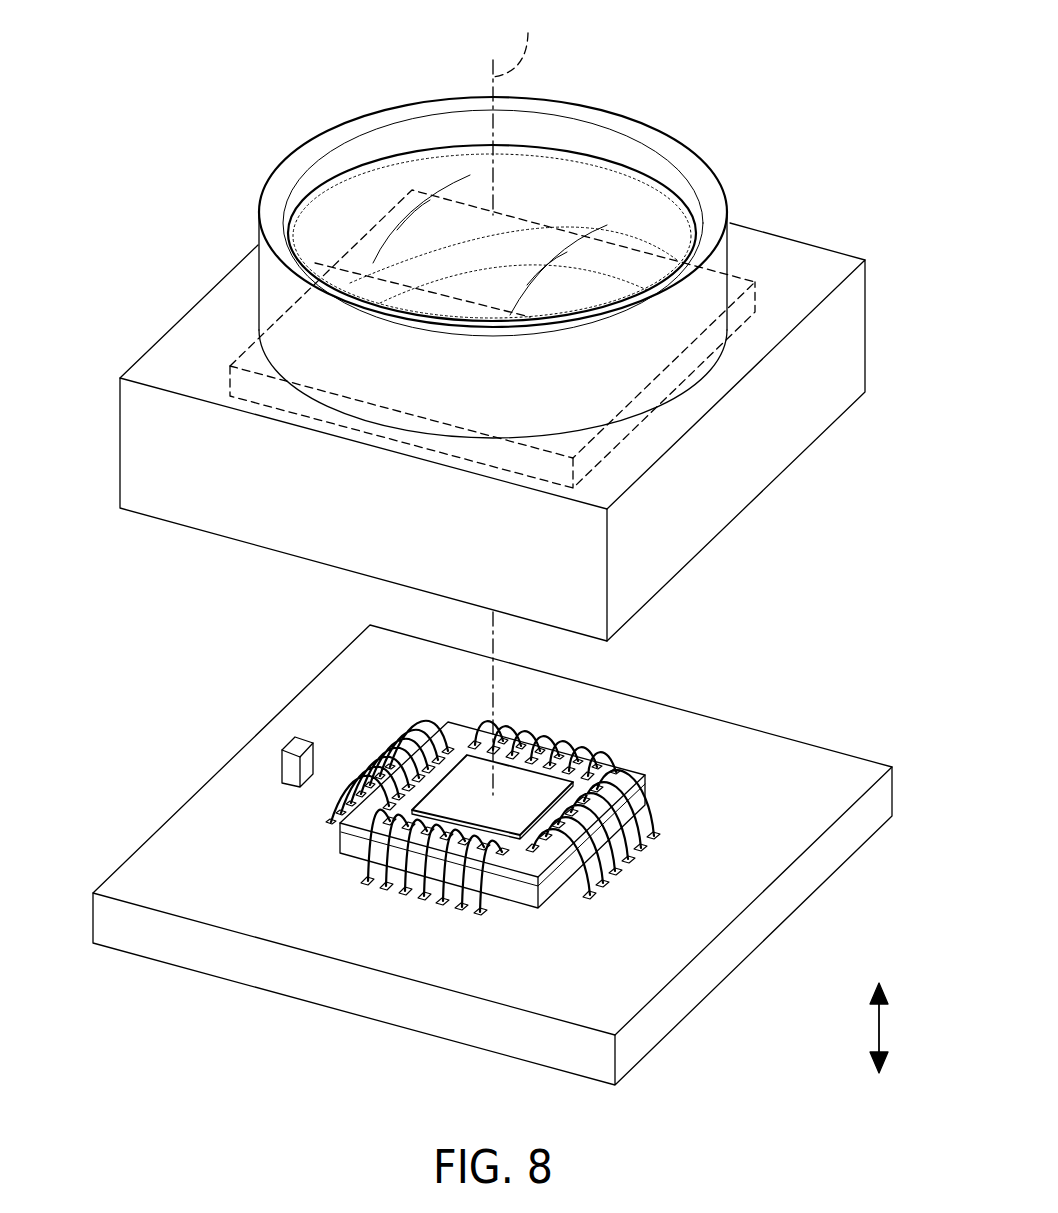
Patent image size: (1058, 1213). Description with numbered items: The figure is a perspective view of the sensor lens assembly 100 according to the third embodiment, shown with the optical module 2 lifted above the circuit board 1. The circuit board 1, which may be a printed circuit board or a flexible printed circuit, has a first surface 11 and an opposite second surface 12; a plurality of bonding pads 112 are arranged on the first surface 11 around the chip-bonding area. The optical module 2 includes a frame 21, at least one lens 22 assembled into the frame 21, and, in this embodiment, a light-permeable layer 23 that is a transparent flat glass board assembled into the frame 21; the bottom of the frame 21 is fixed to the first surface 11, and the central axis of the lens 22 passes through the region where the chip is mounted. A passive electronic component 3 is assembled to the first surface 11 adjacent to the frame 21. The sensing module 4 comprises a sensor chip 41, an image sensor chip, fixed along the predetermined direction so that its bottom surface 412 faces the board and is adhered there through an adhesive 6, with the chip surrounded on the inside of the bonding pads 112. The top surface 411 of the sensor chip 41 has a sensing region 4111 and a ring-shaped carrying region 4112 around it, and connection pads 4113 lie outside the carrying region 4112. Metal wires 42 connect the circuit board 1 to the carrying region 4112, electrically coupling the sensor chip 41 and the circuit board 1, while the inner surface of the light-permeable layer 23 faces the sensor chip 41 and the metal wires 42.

The sensor lens assembly 100 is at (780, 126).
The circuit board 1 is at (84, 917).
The first surface 11 is at (145, 871).
The second surface 12 is at (143, 967).
The bonding pads 112 is at (655, 832).
The optical module 2 is at (420, 56).
The frame 21 is at (311, 132).
The lens 22 is at (395, 148).
The light-permeable layer 23 is at (232, 343).
The passive electronic component 3 is at (272, 756).
The sensing module 4 is at (628, 762).
The sensor chip 41 is at (520, 885).
The top surface 411 is at (197, 573).
The sensing region 4111 is at (451, 792).
The carrying region 4112 is at (474, 744).
The connection pads 4113 is at (436, 717).
The bottom surface 412 is at (347, 865).
The metal wires 42 is at (657, 837).
The adhesive 6 is at (578, 901).